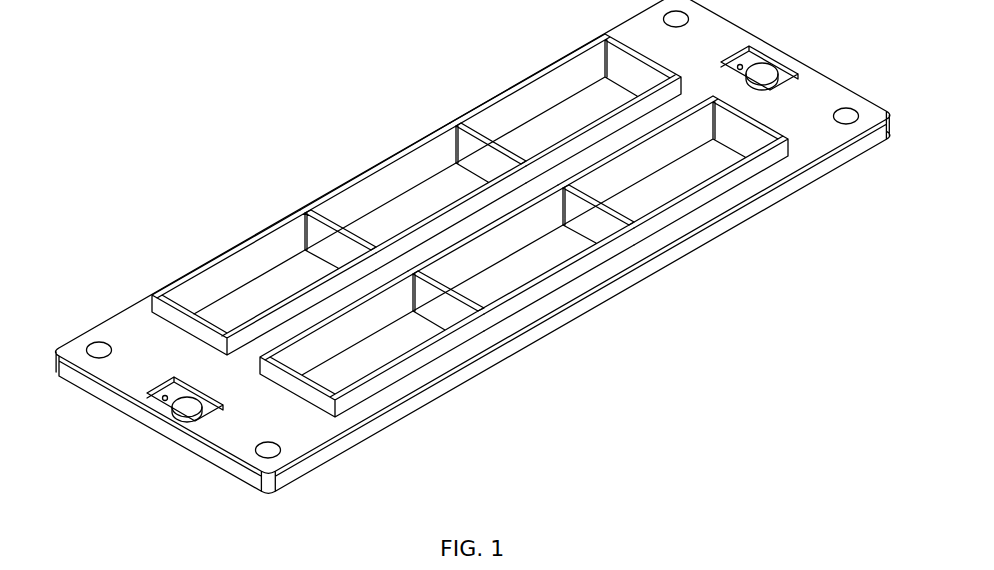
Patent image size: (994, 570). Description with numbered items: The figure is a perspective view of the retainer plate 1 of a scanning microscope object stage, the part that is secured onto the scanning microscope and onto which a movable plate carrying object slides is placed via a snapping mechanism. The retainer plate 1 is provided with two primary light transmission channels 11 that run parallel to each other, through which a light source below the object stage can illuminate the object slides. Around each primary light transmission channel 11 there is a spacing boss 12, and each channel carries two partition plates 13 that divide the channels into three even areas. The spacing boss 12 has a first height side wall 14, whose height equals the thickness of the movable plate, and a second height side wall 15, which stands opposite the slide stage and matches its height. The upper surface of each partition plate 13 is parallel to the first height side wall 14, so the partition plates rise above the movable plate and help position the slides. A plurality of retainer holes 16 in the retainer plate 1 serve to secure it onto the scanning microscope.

The retainer plate 1 is at (140, 338).
The primary light transmission channel 11 is at (270, 292).
The spacing boss 12 is at (390, 185).
The partition plate 13 is at (487, 158).
The first height side wall 14 is at (792, 143).
The second height side wall 15 is at (722, 183).
The retainer hole 16 is at (847, 118).